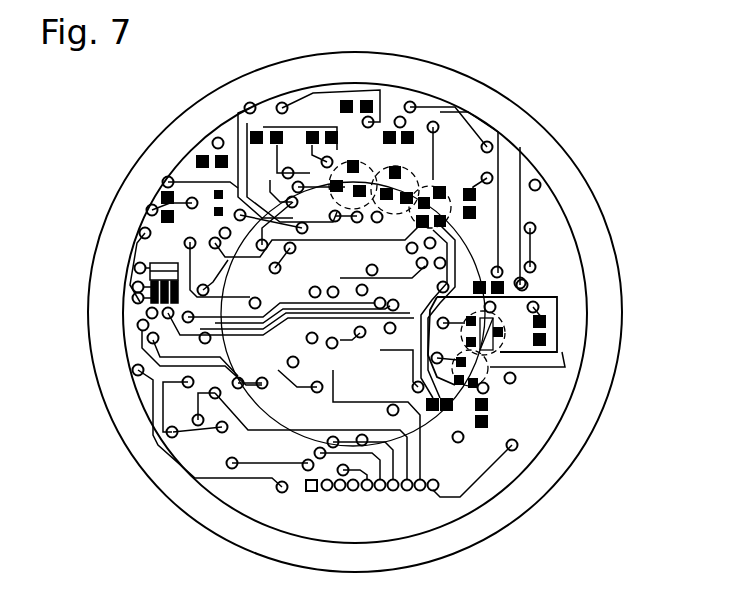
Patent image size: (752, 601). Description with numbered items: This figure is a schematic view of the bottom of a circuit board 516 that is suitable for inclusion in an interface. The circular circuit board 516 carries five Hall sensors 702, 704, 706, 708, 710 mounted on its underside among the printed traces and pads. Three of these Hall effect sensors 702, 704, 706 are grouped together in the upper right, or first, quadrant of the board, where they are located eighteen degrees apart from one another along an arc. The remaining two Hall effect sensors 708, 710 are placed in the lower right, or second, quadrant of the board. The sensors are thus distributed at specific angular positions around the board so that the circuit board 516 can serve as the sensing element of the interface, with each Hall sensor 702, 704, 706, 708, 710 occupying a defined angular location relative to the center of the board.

The circuit board 516 is at (143, 418).
The Hall sensor 702 is at (364, 162).
The Hall sensor 704 is at (408, 169).
The Hall sensor 706 is at (447, 188).
The Hall sensor 708 is at (507, 345).
The Hall sensor 710 is at (490, 385).